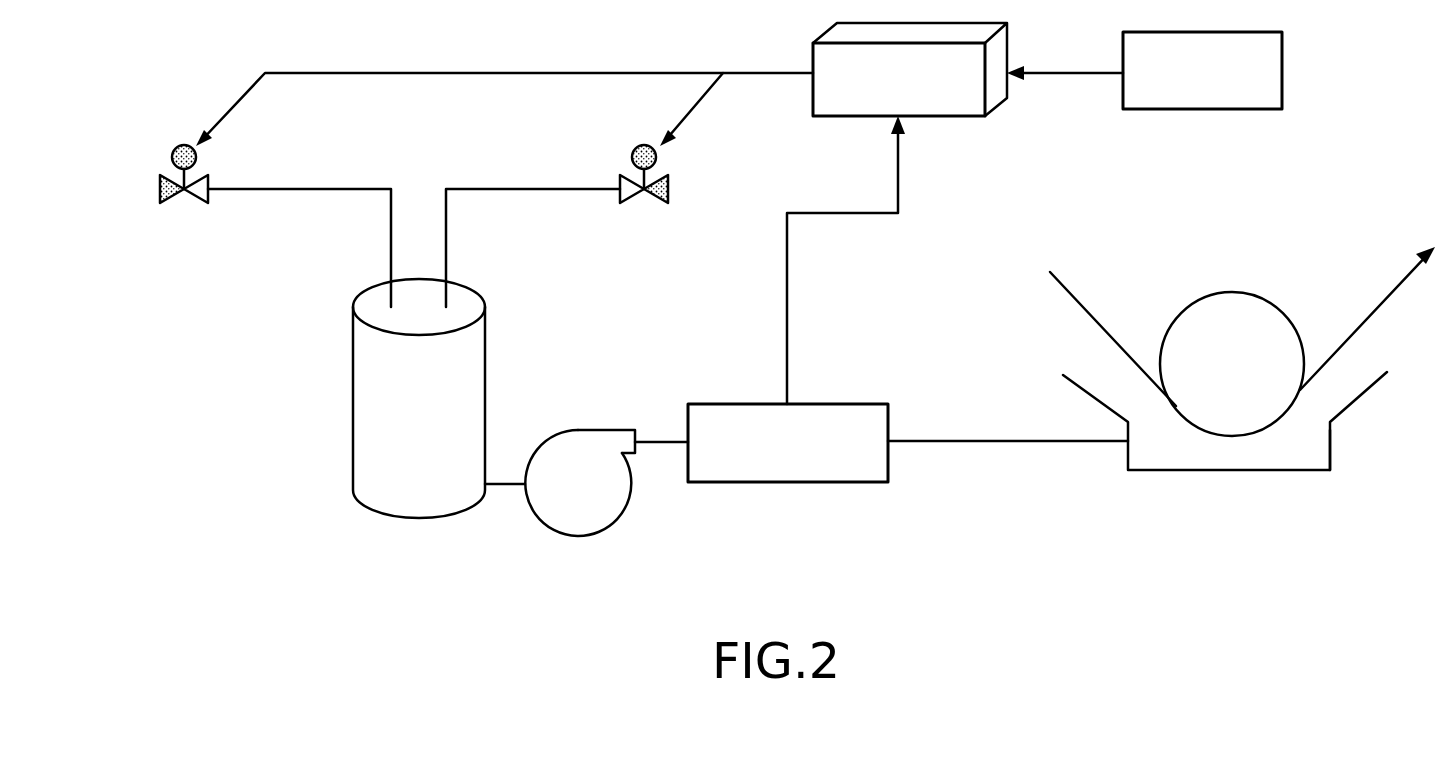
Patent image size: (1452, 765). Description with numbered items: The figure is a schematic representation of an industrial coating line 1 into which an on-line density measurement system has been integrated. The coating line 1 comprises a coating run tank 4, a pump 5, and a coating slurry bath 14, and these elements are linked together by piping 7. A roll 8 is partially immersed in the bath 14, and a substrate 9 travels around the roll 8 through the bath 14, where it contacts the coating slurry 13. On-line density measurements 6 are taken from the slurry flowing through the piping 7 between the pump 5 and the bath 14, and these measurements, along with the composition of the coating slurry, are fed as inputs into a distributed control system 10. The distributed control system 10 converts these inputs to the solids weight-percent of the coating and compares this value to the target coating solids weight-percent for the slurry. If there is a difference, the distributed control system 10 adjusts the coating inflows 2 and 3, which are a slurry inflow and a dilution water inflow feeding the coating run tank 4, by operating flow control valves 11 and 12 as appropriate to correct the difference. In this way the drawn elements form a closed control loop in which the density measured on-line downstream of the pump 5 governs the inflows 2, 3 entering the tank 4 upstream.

The industrial coating line 1 is at (218, 400).
The coating inflow 2 is at (290, 190).
The coating inflow 3 is at (590, 190).
The coating run tank 4 is at (363, 505).
The pump 5 is at (590, 430).
The on-line density measurements 6 is at (738, 404).
The piping 7 is at (985, 443).
The roll 8 is at (1224, 380).
The substrate 9 is at (1068, 299).
The distributed control system 10 is at (962, 118).
The flow control valve 11 is at (178, 147).
The flow control valve 12 is at (638, 147).
The coating slurry 13 is at (1222, 452).
The coating slurry bath 14 is at (1332, 442).